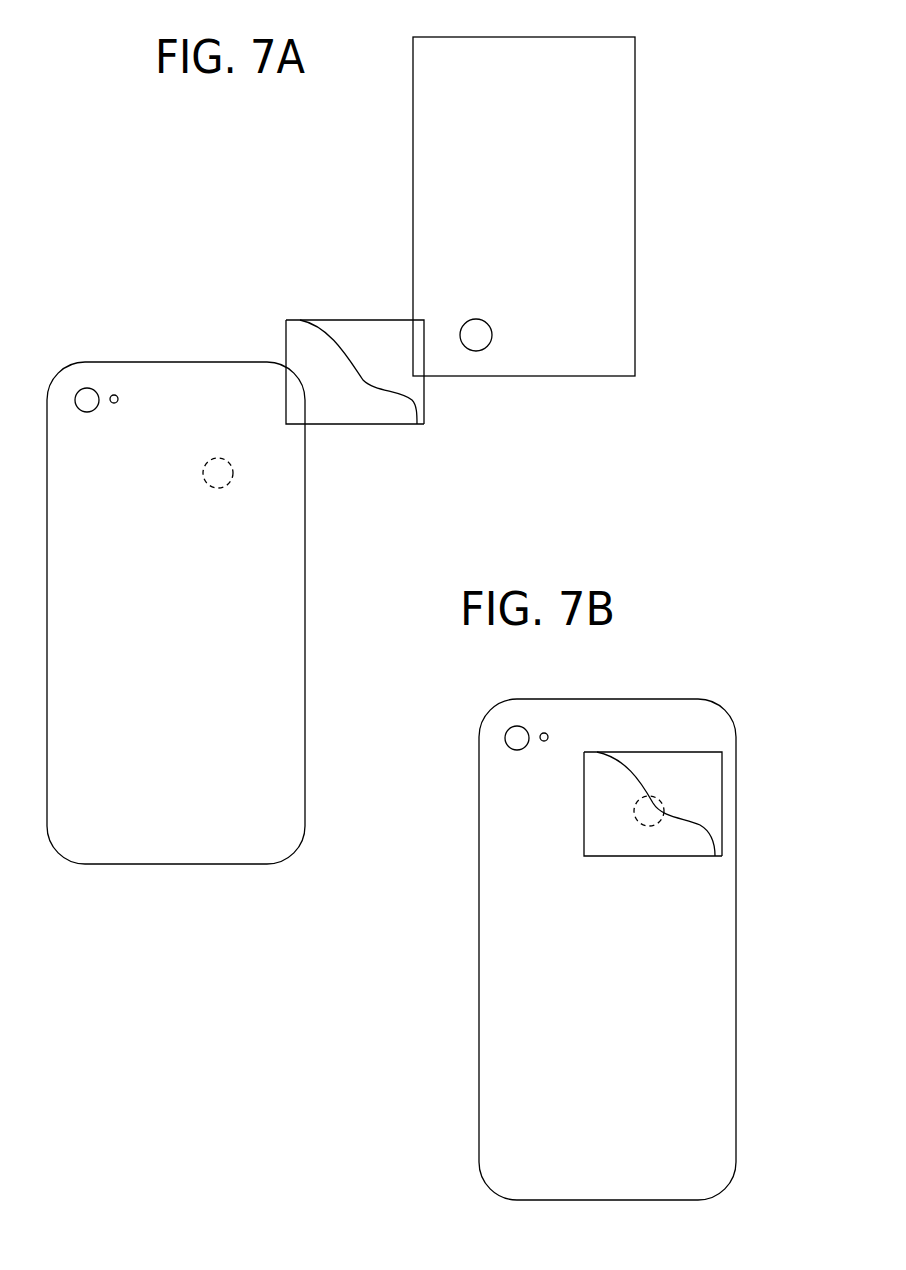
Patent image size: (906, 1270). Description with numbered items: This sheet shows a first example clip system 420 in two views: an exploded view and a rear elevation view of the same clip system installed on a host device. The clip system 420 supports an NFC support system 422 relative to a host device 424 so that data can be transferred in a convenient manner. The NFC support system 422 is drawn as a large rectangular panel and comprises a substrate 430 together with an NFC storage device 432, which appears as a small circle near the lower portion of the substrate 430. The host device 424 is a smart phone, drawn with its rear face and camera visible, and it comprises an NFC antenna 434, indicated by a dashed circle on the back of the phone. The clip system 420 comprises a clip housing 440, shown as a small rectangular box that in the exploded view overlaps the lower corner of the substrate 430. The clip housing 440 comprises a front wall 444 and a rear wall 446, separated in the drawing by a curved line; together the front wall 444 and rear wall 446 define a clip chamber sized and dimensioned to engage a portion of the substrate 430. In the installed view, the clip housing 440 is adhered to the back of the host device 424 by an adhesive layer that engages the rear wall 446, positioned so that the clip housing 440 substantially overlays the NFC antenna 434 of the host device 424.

In FIG. 7A, the clip system 420 is at (322, 357).
In FIG. 7B, the clip system 420 is at (677, 803).
In FIG. 7A, the NFC support system 422 is at (565, 232).
In FIG. 7A, the host device 424 is at (142, 358).
In FIG. 7B, the host device 424 is at (532, 697).
In FIG. 7A, the substrate 430 is at (615, 174).
In FIG. 7A, the NFC storage device 432 is at (481, 349).
In FIG. 7A, the NFC antenna 434 is at (235, 472).
In FIG. 7B, the NFC antenna 434 is at (655, 827).
In FIG. 7A, the clip housing 440 is at (322, 357).
In FIG. 7B, the clip housing 440 is at (677, 824).
In FIG. 7A, the front wall 444 is at (337, 413).
In FIG. 7B, the front wall 444 is at (613, 842).
In FIG. 7A, the rear wall 446 is at (370, 330).
In FIG. 7B, the rear wall 446 is at (700, 802).